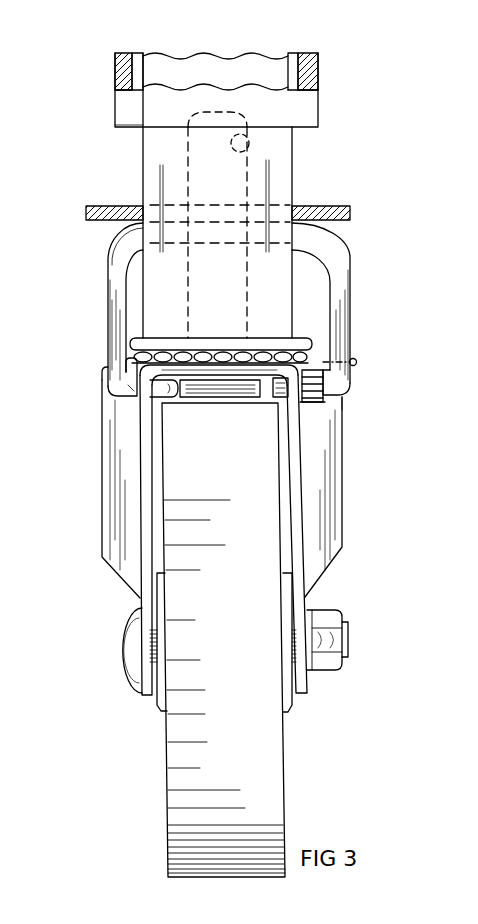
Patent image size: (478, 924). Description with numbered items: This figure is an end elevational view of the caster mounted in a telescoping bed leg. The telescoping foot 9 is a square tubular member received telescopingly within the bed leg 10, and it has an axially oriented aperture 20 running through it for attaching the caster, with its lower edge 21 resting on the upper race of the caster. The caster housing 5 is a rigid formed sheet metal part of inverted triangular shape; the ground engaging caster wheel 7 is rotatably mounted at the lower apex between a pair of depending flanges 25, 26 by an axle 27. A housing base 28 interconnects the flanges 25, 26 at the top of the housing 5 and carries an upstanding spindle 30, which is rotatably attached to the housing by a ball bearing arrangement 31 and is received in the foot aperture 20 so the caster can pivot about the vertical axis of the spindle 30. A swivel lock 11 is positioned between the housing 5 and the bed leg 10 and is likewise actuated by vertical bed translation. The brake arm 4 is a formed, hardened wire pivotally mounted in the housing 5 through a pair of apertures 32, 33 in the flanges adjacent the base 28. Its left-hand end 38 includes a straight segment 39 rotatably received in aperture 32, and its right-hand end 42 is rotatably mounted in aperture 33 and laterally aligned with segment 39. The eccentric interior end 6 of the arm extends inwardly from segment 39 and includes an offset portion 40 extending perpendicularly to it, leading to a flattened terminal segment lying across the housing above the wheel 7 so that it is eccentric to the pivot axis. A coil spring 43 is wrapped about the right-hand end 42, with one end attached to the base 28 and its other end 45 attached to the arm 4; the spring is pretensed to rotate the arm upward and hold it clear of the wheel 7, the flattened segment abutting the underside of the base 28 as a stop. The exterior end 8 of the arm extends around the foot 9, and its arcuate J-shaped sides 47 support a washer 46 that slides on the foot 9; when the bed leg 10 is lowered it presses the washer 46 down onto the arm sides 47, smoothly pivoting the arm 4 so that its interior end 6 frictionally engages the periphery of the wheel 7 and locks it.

The brake arm 4 is at (343, 233).
The housing portion 5 is at (107, 505).
The eccentric interior end 6 is at (155, 402).
The caster wheel 7 is at (272, 778).
The exterior end 8 is at (120, 240).
The telescoping foot 9 is at (165, 75).
The bed leg 10 is at (302, 108).
The swivel lock 11 is at (243, 392).
The aperture 20 is at (252, 143).
The lower edge 21 is at (115, 130).
The depending flange 25 is at (145, 541).
The depending flange 26 is at (300, 544).
The axle 27 is at (137, 655).
The housing base 28 is at (220, 372).
The spindle 30 is at (202, 167).
The ball bearing arrangement 31 is at (178, 352).
The aperture 32 is at (100, 367).
The aperture 33 is at (308, 420).
The left-hand end 38 is at (115, 397).
The straight segment 39 is at (133, 388).
The offset portion 40 is at (170, 397).
The right-hand end 42 is at (327, 398).
The coil spring 43 is at (310, 402).
The spring end 45 is at (357, 361).
The washer 46 is at (100, 208).
The arm sides 47 is at (107, 294).